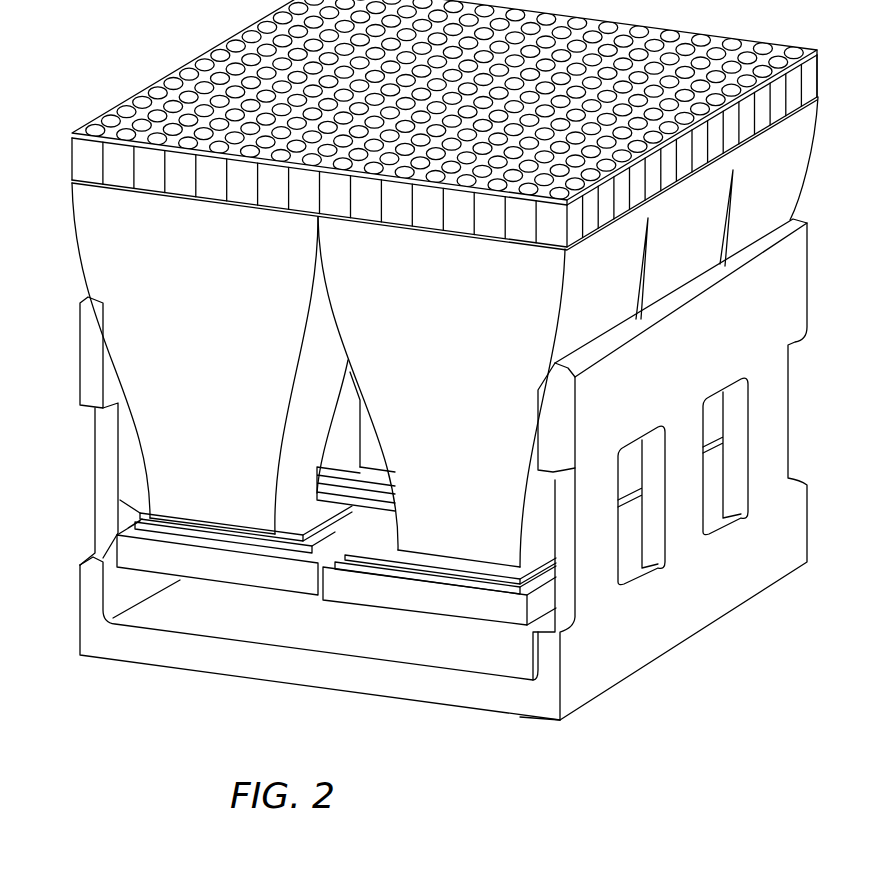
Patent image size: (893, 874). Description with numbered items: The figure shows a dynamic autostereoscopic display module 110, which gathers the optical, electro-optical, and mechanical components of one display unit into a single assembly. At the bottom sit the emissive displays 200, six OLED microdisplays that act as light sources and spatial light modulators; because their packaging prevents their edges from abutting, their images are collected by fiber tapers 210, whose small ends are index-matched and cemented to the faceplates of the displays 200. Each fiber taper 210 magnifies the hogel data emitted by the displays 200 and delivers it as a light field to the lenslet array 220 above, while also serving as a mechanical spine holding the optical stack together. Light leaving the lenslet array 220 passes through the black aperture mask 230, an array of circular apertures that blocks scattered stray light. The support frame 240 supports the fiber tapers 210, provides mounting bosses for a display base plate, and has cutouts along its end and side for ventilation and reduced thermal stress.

The dynamic autostereoscopic display module 110 is at (163, 708).
The emissive display 200 is at (138, 514).
The fiber taper 210 is at (90, 244).
The lenslet array 220 is at (72, 158).
The aperture mask 230 is at (208, 50).
The support frame 240 is at (688, 622).